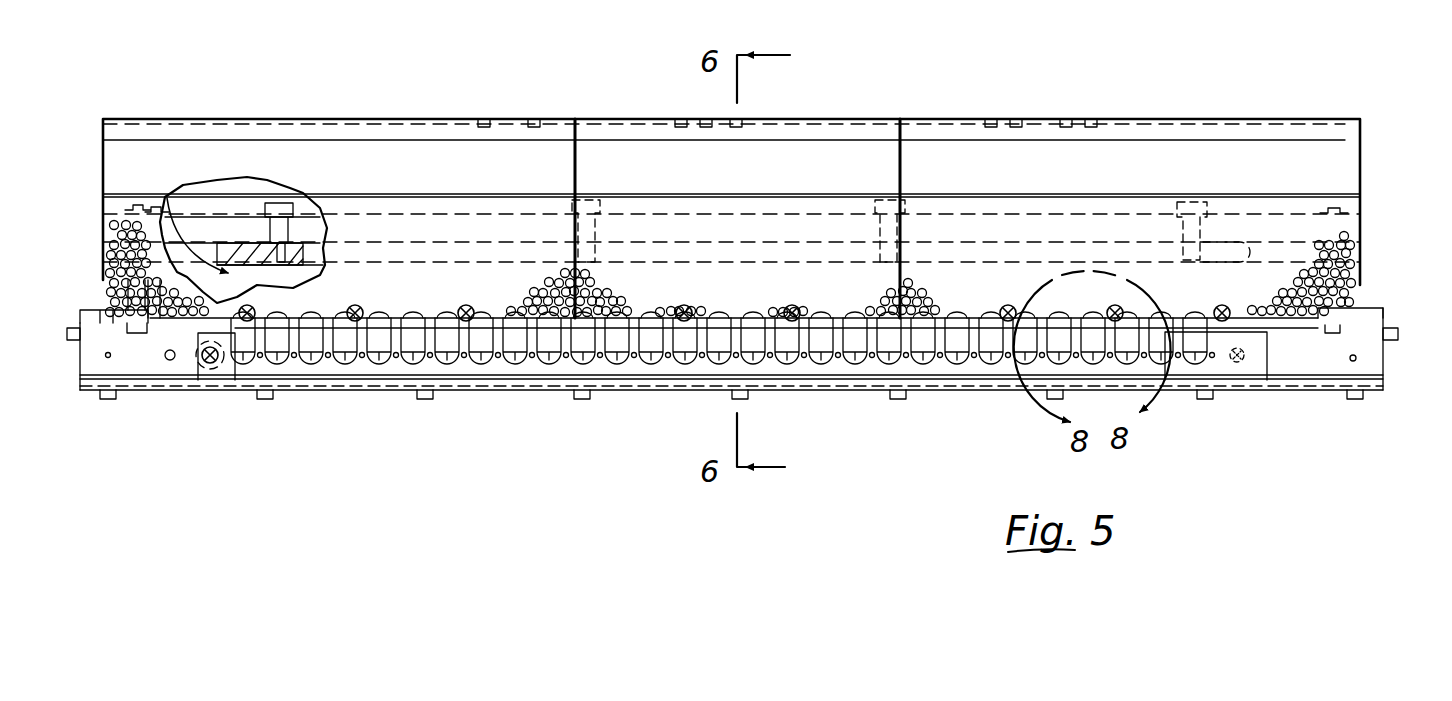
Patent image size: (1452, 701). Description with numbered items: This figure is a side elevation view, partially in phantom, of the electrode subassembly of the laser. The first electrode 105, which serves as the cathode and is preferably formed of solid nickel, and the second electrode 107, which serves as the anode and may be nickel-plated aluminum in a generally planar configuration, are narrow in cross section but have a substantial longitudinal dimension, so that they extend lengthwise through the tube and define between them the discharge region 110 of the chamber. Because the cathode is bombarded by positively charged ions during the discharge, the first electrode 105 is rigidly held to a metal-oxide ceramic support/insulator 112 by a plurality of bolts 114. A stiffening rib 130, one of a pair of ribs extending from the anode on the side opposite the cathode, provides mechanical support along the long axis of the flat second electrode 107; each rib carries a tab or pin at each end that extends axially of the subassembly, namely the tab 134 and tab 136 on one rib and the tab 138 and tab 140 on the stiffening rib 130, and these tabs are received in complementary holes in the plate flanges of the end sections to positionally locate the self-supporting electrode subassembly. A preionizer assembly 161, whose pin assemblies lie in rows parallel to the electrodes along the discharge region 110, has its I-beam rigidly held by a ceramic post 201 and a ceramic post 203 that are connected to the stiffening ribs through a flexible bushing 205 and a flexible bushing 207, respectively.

The first electrode 105 is at (250, 250).
The second electrode 107 is at (110, 265).
The discharge region 110 is at (180, 235).
The metal-oxide ceramic support/insulator 112 is at (215, 225).
The bolts 114 is at (291, 200).
The stiffening rib 130 is at (330, 370).
The tab 134 is at (80, 345).
The tab 136 is at (1390, 342).
The tab 138 is at (68, 322).
The tab 140 is at (1390, 326).
The preionizer assembly 161 is at (98, 212).
The ceramic post 201 is at (205, 366).
The ceramic post 203 is at (1237, 364).
The flexible bushing 205 is at (212, 366).
The flexible bushing 207 is at (1252, 368).